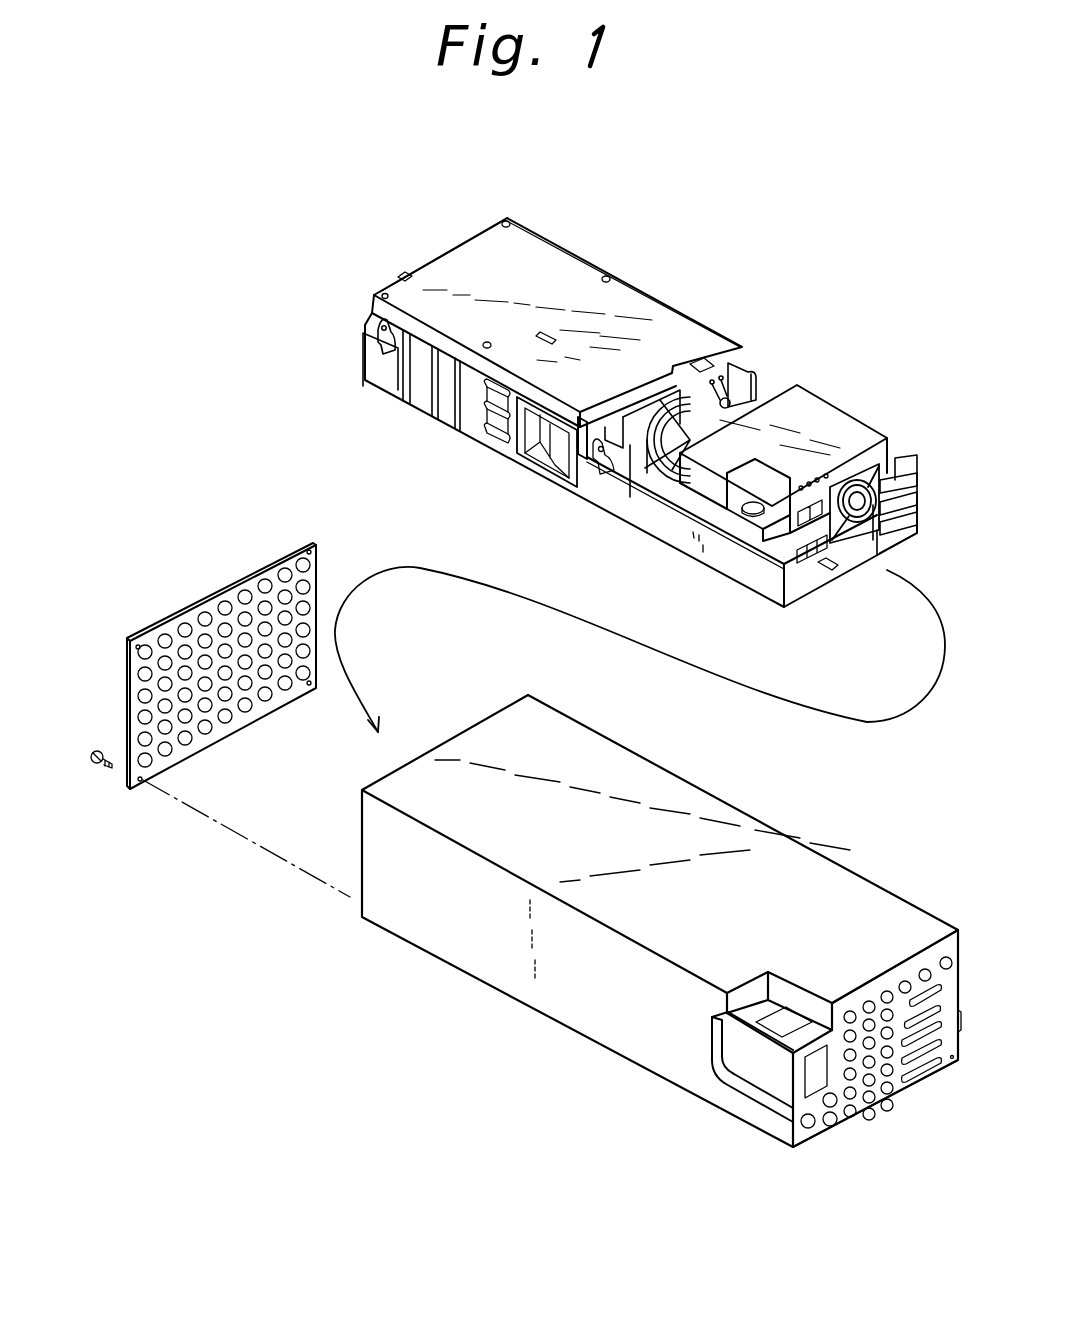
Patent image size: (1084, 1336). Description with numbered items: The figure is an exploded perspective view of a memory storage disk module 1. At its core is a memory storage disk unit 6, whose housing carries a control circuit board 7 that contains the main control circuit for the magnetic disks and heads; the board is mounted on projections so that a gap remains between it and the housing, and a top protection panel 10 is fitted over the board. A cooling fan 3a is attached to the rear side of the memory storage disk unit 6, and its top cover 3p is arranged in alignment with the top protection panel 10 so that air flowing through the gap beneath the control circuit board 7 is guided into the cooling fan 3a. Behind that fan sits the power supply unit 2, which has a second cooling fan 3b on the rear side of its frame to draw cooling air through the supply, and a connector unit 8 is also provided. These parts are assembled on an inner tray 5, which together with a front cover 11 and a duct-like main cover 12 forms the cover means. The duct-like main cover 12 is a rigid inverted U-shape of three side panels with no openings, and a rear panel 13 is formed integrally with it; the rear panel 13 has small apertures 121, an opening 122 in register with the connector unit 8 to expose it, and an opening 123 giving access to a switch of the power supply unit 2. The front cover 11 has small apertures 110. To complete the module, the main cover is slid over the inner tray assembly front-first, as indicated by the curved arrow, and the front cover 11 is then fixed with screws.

The memory storage disk module 1 is at (360, 265).
The power supply unit 2 is at (818, 418).
The cooling fan 3a is at (713, 385).
The cooling fan 3b is at (862, 463).
The top cover 3p is at (660, 417).
The inner tray 5 is at (617, 507).
The memory storage disk unit 6 is at (418, 398).
The control circuit board 7 is at (552, 238).
The connector unit 8 is at (888, 553).
The top protection panel 10 is at (457, 262).
The front cover 11 is at (214, 603).
The small apertures 110 is at (227, 707).
The duct-like main cover 12 is at (585, 1027).
The rear panel 13 is at (890, 980).
The small apertures 121 is at (885, 1104).
The opening 122 is at (928, 1043).
The opening 123 is at (812, 1073).